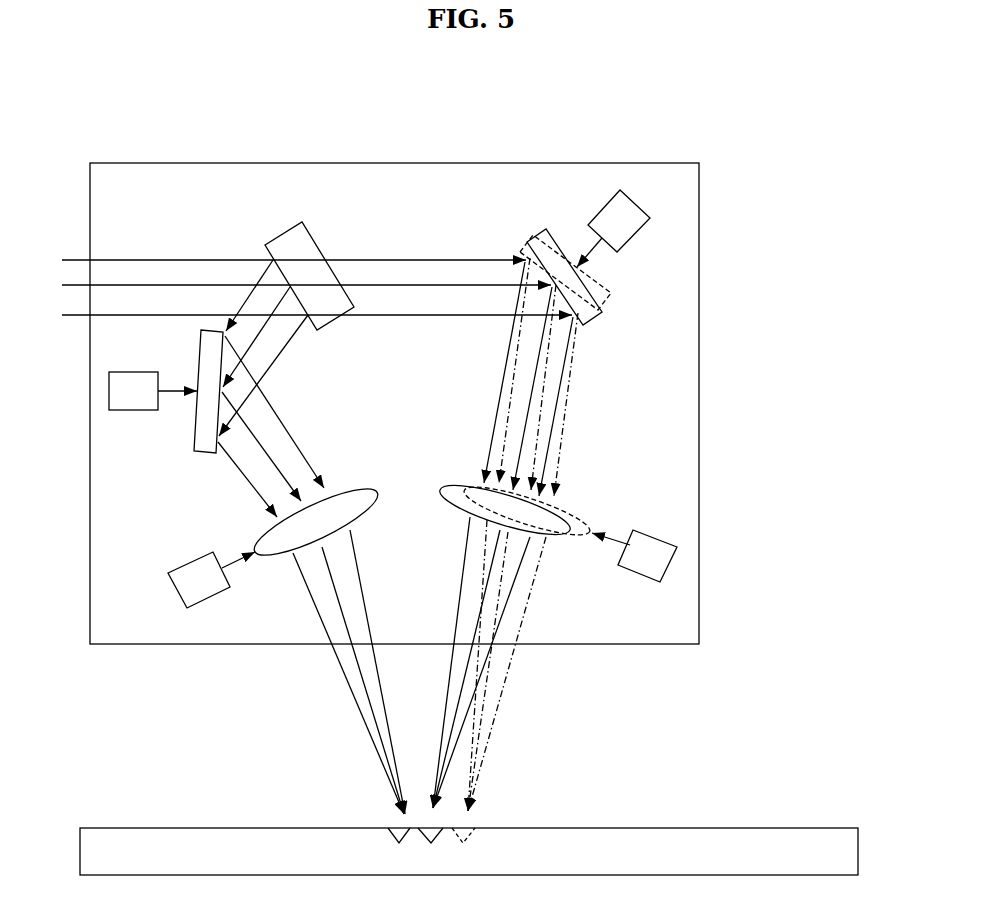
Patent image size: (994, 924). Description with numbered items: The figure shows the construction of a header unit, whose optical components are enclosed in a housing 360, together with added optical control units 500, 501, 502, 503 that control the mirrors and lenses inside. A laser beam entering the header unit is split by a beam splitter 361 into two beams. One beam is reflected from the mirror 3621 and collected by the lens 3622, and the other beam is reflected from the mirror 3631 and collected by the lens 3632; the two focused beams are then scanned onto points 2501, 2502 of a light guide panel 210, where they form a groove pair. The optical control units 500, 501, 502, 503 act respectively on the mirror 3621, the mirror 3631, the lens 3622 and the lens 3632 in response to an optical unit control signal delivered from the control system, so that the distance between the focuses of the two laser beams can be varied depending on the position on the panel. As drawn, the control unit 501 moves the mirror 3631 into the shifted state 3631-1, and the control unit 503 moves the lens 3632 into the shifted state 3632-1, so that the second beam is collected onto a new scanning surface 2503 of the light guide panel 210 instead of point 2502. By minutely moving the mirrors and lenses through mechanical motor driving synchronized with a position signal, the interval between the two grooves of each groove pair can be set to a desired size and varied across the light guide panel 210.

The optical head housing 360 is at (540, 163).
The beam splitter 361 is at (317, 238).
The mirror 3621 is at (200, 345).
The lens 3622 is at (370, 512).
The mirror 3631 is at (597, 320).
The mirror state 3631-1 is at (600, 288).
The lens 3632 is at (453, 486).
The lens state 3632-1 is at (577, 507).
The optical control unit 500 is at (109, 390).
The optical control unit 501 is at (638, 204).
The optical control unit 502 is at (208, 597).
The optical control unit 503 is at (658, 531).
The light guide panel 210 is at (752, 828).
The point 2501 is at (392, 826).
The point 2502 is at (440, 838).
The new scanning surface 2503 is at (470, 828).